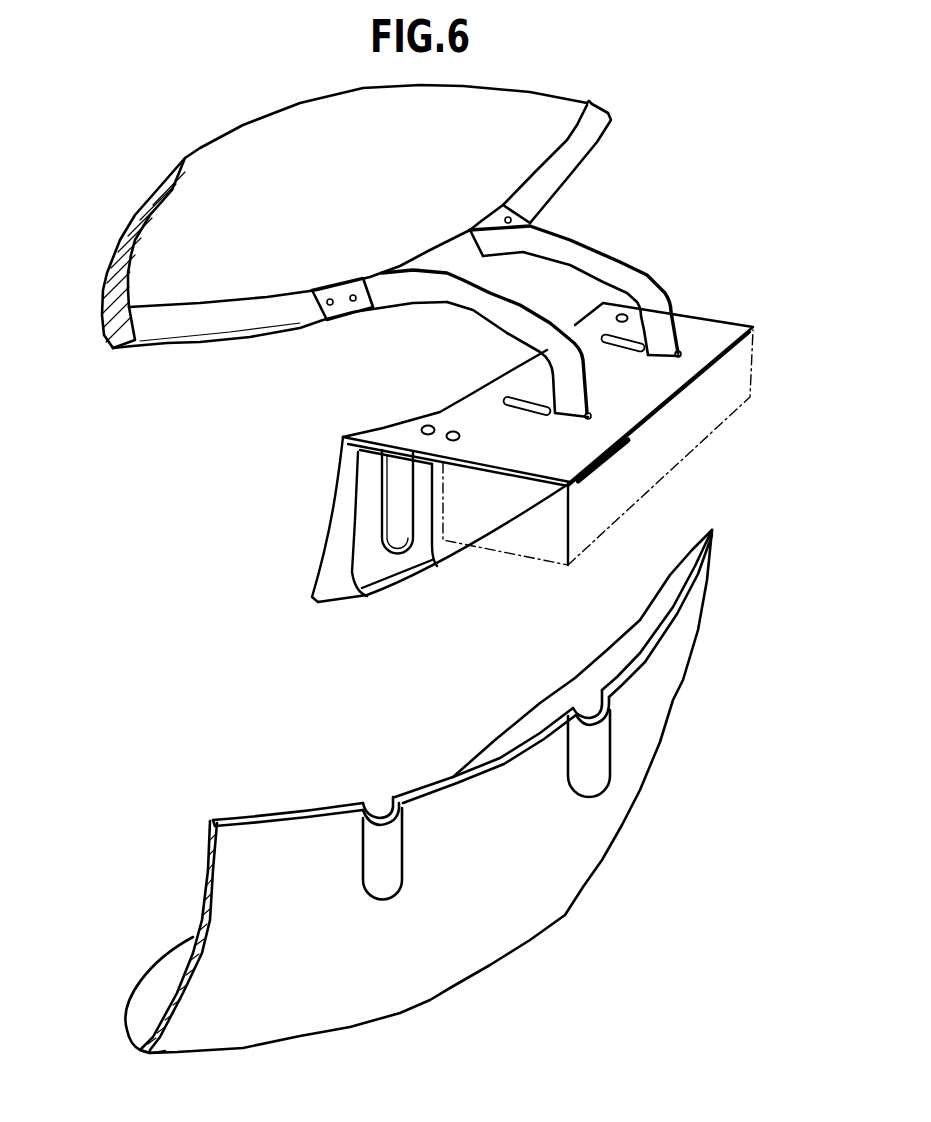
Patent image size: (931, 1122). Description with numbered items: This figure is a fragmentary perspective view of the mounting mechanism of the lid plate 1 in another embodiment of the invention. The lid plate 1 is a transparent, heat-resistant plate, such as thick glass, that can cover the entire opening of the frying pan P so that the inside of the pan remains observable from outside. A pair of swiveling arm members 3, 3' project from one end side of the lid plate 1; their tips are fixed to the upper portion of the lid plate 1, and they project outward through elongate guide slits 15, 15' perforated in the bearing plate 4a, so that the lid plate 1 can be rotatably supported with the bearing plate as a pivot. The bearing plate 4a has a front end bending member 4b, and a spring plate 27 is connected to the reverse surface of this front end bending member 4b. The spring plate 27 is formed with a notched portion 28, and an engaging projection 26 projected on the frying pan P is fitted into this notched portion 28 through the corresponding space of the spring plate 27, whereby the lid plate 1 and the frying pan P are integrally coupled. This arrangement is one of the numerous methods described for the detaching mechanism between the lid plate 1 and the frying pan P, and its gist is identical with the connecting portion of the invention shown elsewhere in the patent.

The lid plate 1 is at (277, 275).
The swiveling arm member 3 is at (486, 344).
The swiveling arm member 3' is at (575, 269).
The elongate guide slit 15 is at (473, 396).
The elongate guide slit 15' is at (668, 289).
The bearing plate 4a is at (637, 403).
The front end bending member 4b is at (338, 502).
The spring plate 27 is at (380, 577).
The notched portion 28 is at (397, 545).
The engaging projection 26 is at (595, 713).
The frying pan P is at (227, 860).